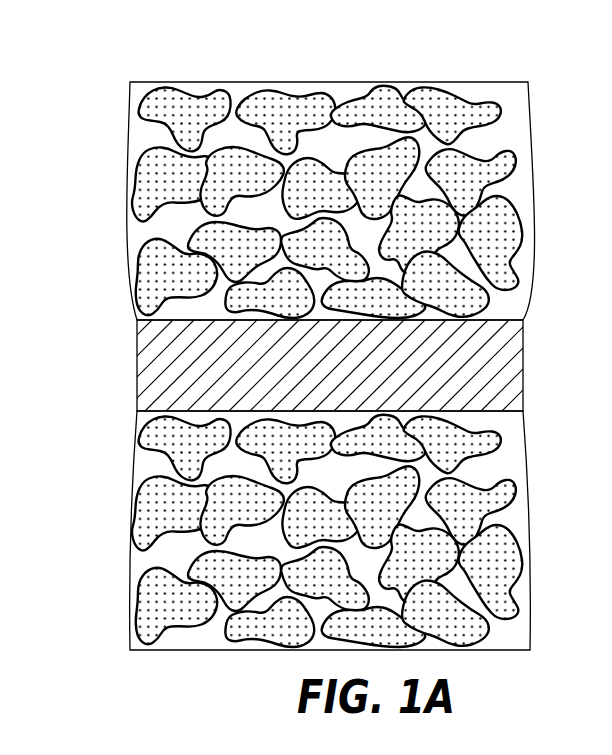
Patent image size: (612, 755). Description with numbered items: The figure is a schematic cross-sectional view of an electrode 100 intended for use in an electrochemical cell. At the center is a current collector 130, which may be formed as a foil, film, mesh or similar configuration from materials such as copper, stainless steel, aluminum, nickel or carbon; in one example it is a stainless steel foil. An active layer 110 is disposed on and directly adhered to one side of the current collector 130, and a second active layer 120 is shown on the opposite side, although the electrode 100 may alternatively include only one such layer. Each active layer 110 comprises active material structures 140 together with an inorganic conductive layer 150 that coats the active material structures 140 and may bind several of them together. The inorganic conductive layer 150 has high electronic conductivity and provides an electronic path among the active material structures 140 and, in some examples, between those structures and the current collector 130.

The electrode 100 is at (305, 328).
The active layer 110 is at (280, 170).
The active layer 120 is at (128, 530).
The current collector 130 is at (138, 352).
The active material structures 140 is at (182, 112).
The inorganic conductive layer 150 is at (238, 100).